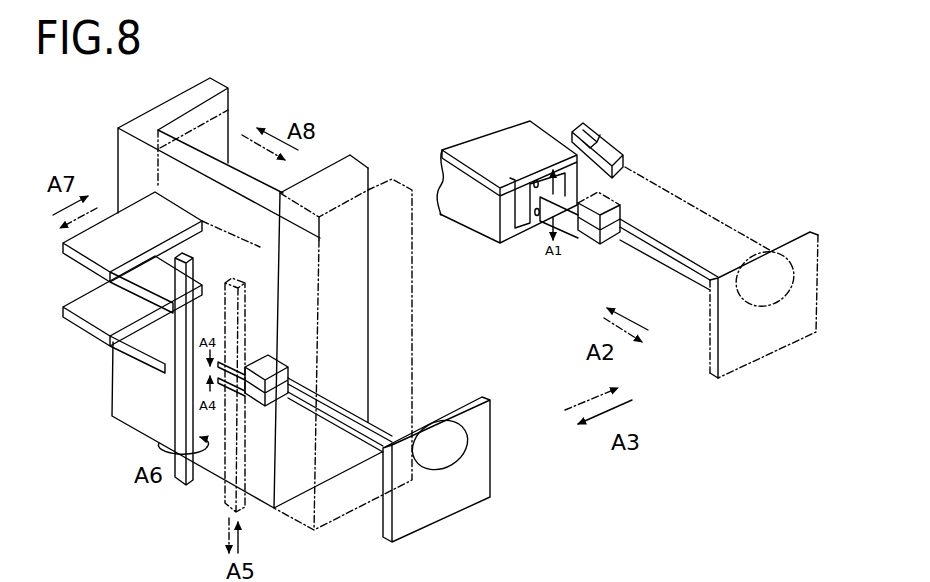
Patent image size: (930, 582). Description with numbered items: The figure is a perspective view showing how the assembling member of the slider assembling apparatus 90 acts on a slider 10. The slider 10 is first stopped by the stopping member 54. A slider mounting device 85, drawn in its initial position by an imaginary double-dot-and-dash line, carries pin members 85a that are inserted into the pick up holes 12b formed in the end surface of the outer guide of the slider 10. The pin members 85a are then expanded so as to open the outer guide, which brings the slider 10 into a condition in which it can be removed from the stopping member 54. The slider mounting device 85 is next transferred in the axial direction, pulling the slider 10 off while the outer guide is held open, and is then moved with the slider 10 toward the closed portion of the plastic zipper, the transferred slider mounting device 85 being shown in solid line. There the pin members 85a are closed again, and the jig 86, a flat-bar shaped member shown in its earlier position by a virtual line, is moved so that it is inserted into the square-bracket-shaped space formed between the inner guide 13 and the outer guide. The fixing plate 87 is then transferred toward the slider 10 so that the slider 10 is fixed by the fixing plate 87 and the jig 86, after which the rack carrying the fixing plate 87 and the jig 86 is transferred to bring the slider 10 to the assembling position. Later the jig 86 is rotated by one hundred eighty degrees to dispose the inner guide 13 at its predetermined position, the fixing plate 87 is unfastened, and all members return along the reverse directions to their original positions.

The slider assembling apparatus 90 is at (366, 143).
The fixing plate 87 is at (112, 307).
The jig 86 is at (180, 412).
The slider mounting device 85 is at (365, 365).
The pin members 85a is at (248, 366).
The slider 10 is at (495, 143).
The stopping member 54 is at (507, 223).
The pick up holes 12b is at (528, 178).
The inner guide 13 is at (592, 132).